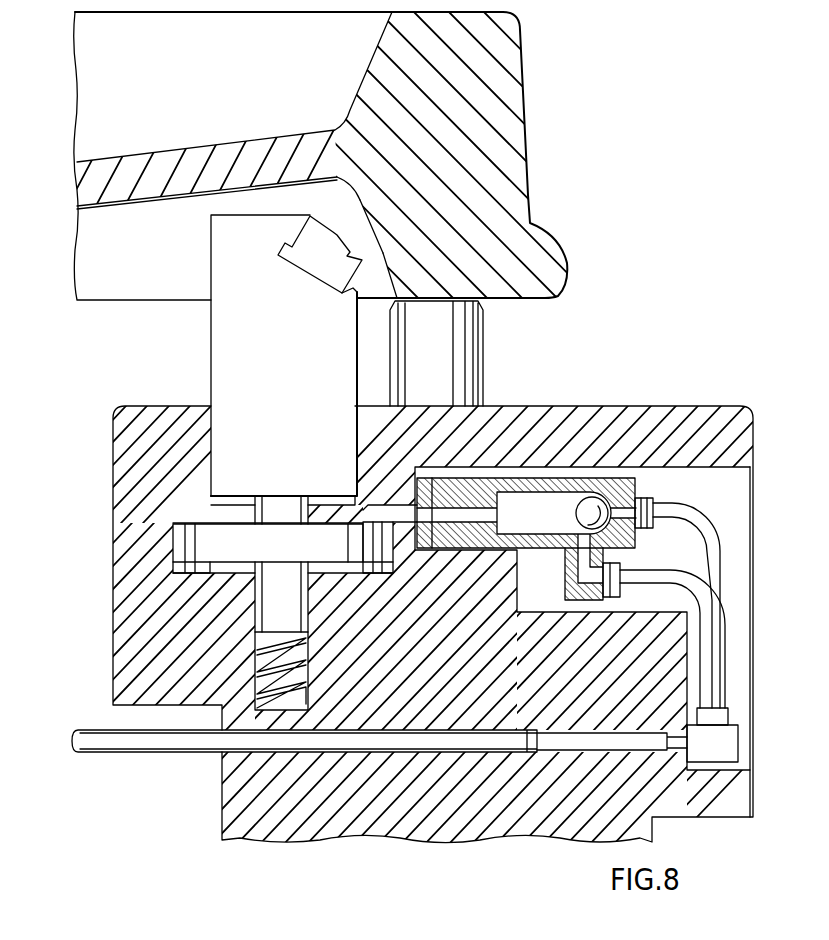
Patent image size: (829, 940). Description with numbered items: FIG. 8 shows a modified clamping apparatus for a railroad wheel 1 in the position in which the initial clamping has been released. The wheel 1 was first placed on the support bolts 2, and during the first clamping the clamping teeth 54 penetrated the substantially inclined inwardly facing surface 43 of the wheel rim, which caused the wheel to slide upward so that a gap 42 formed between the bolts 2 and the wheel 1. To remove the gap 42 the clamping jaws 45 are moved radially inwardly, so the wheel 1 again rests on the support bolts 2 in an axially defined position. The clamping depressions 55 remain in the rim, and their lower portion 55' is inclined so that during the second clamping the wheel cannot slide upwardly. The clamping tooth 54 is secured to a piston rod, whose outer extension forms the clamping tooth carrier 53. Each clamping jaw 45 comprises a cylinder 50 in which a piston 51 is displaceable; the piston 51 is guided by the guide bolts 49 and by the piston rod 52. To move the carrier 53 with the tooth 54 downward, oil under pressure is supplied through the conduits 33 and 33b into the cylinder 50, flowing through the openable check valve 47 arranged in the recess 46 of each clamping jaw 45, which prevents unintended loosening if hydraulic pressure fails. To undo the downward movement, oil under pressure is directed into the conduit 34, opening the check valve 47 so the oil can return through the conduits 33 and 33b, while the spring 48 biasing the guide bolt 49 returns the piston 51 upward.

The railroad wheel 1 is at (472, 65).
The inclined inwardly facing surface of the wheel rim 43 is at (333, 200).
The clamping depression 55 is at (415, 226).
The lower portion of the impression 55' is at (411, 296).
The gap 42 is at (502, 304).
The clamping tooth 54 is at (337, 268).
The clamping tooth carrier (piston rod) 53 is at (235, 365).
The support bolt 2 is at (460, 345).
The clamping jaw 45 is at (717, 428).
The recess 46 is at (735, 510).
The piston rod 52 is at (287, 510).
The guide bolt 49 is at (270, 605).
The cylinder 50 is at (328, 567).
The piston 51 is at (363, 565).
The conduit 33b is at (397, 513).
The spring 48 is at (302, 672).
The openable check valve 47 is at (607, 492).
The conduit 34 is at (647, 580).
The conduit 33 is at (692, 528).